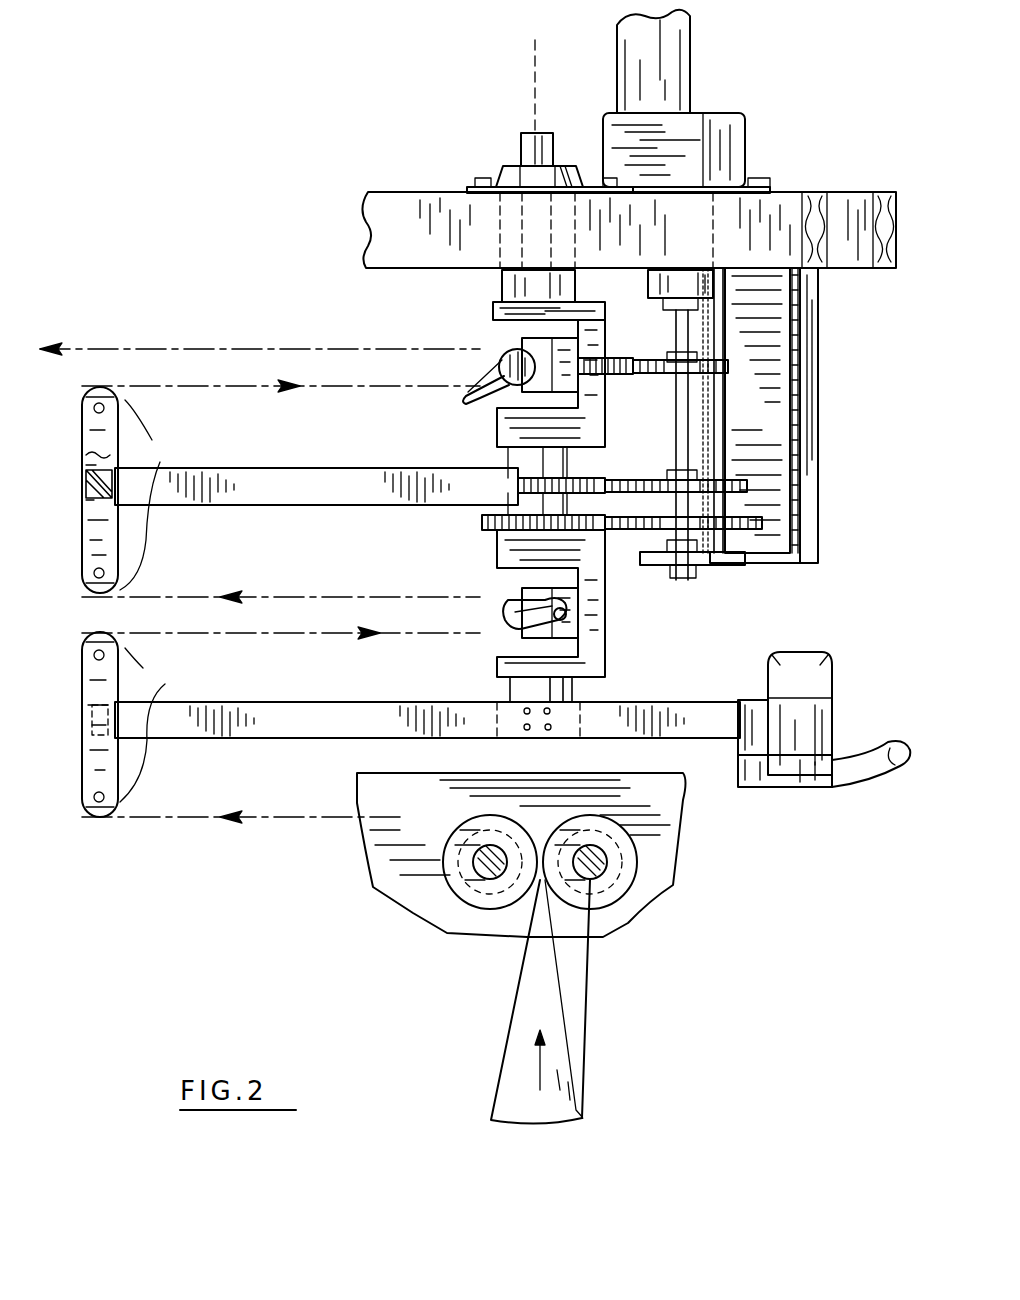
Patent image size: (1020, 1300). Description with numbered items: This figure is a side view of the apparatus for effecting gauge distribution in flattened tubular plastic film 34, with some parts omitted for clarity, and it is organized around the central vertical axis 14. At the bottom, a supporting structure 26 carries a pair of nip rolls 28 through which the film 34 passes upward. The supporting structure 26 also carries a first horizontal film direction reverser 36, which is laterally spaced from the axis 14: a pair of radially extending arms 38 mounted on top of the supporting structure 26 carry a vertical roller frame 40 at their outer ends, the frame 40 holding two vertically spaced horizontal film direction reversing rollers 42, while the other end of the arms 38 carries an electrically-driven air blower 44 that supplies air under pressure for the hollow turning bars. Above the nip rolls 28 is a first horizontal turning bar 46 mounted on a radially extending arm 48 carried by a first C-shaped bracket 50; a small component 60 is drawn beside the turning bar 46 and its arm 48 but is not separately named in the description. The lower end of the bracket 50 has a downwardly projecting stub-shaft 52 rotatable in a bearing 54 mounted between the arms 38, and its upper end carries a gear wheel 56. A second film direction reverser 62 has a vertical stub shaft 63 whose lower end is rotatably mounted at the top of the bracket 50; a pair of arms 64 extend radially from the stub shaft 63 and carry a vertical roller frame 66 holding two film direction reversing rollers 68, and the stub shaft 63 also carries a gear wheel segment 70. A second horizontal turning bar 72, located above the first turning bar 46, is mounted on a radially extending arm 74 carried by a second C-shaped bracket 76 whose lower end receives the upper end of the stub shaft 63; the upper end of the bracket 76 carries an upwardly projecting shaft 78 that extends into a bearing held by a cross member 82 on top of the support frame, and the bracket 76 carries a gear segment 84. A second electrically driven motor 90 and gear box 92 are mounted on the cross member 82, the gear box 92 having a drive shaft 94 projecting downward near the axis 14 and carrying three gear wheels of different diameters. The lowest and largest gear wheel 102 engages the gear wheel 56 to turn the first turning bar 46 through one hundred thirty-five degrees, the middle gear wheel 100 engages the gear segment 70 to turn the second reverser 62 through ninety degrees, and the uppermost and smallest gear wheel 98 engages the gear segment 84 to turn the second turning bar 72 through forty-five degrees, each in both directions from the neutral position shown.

The central vertical axis 14 is at (537, 88).
The supporting structure 26 is at (437, 918).
The nip rolls 28 is at (556, 908).
The flattened tubular film 34 is at (106, 349).
The first horizontal film direction reverser 36 is at (78, 733).
The radially extending arms 38 is at (275, 707).
The vertical roller frame 40 is at (85, 680).
The film direction reversing rollers 42 is at (148, 725).
The air blower 44 is at (826, 712).
The first horizontal turning bar 46 is at (506, 614).
The radially extending arm 48 is at (584, 616).
The first C-shaped bracket 50 is at (500, 558).
The stub-shaft 52 is at (530, 692).
The bearing 54 is at (500, 720).
The gear wheel 56 is at (484, 522).
The pivot pin 60 is at (566, 620).
The second film direction reverser 62 is at (78, 519).
The vertical stub shaft 63 is at (527, 452).
The arms 64 is at (240, 470).
The vertical roller frame 66 is at (82, 450).
The film direction reversing rollers 68 is at (145, 495).
The gear wheel segment 70 is at (518, 486).
The second horizontal turning bar 72 is at (500, 367).
The radially extending arm 74 is at (540, 342).
The second C-shaped bracket 76 is at (498, 306).
The upwardly projecting shaft 78 is at (532, 222).
The cross member 82 is at (386, 190).
The gear segment 84 is at (616, 358).
The second electrically driven motor 90 is at (680, 60).
The gear box 92 is at (693, 120).
The drive shaft 94 is at (672, 300).
The uppermost gear wheel 98 is at (662, 374).
The middle gear wheel 100 is at (634, 478).
The lowest gear wheel 102 is at (632, 532).